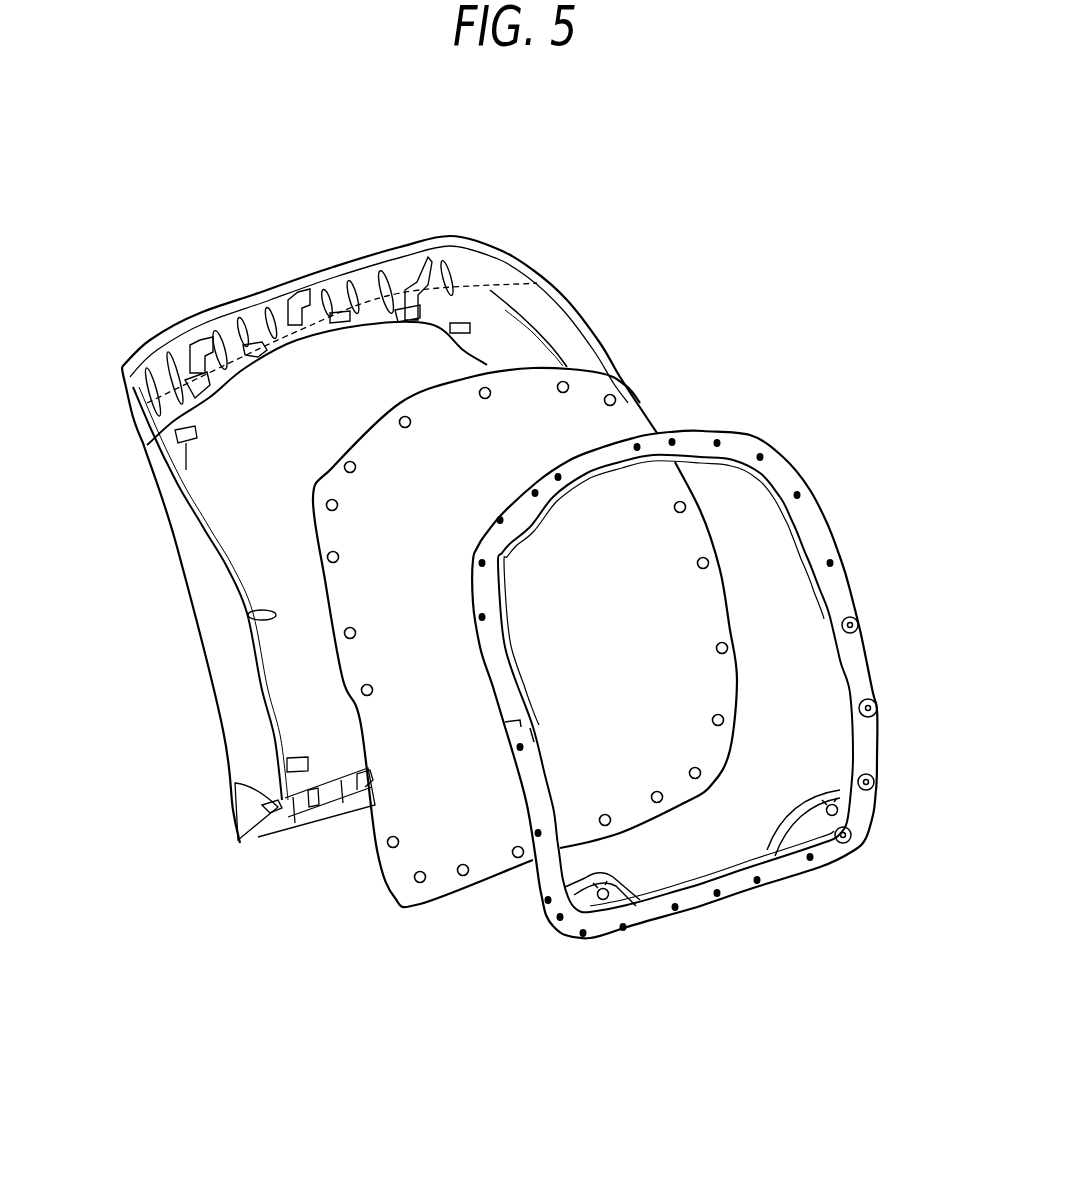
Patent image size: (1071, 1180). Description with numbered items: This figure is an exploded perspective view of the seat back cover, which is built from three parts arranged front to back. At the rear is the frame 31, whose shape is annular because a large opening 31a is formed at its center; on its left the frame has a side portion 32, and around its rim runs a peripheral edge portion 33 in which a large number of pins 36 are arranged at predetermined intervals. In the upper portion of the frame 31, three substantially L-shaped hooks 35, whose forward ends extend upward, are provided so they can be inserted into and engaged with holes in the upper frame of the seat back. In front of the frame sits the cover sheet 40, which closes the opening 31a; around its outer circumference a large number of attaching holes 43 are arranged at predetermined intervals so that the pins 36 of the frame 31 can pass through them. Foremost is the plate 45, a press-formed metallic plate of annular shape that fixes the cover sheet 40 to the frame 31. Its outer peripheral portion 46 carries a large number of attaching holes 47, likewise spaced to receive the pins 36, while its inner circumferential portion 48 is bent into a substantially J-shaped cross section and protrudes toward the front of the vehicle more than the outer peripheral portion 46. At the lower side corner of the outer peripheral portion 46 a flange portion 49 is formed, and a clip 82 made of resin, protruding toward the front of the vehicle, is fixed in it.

The frame 31 is at (500, 240).
The opening 31a is at (260, 537).
The side portion 32 is at (557, 325).
The peripheral edge portion 33 is at (483, 357).
The hook 35 is at (200, 343).
The pin 36 is at (252, 352).
The cover sheet 40 is at (393, 883).
The attaching hole 43 is at (467, 876).
The plate 45 is at (557, 935).
The outer peripheral portion 46 is at (777, 467).
The attaching hole 47 is at (493, 690).
The inner circumferential portion 48 is at (527, 523).
The flange portion 49 is at (610, 880).
The clip 82 is at (607, 900).